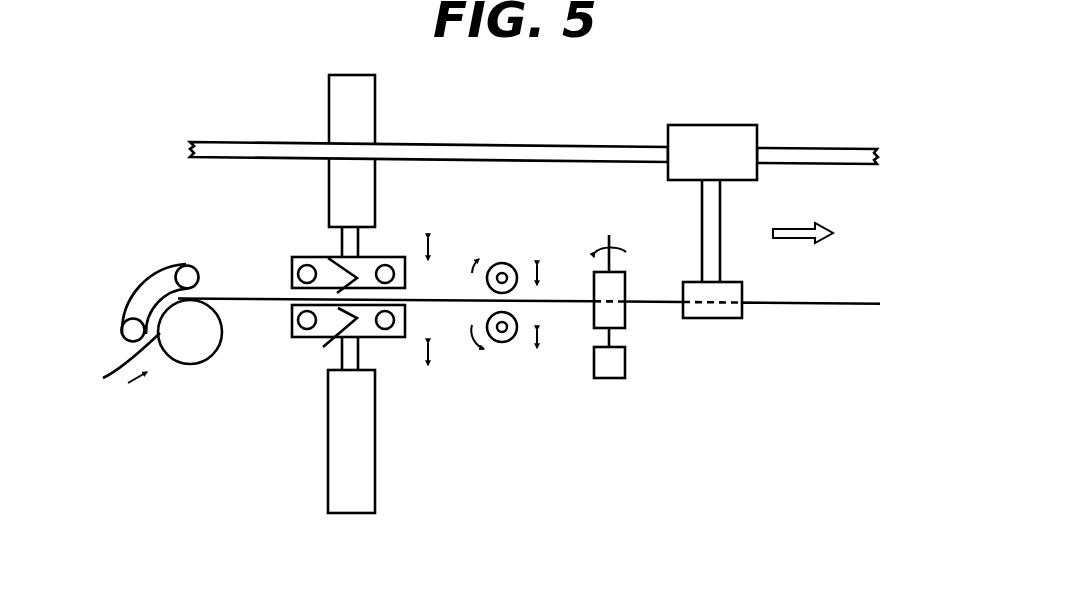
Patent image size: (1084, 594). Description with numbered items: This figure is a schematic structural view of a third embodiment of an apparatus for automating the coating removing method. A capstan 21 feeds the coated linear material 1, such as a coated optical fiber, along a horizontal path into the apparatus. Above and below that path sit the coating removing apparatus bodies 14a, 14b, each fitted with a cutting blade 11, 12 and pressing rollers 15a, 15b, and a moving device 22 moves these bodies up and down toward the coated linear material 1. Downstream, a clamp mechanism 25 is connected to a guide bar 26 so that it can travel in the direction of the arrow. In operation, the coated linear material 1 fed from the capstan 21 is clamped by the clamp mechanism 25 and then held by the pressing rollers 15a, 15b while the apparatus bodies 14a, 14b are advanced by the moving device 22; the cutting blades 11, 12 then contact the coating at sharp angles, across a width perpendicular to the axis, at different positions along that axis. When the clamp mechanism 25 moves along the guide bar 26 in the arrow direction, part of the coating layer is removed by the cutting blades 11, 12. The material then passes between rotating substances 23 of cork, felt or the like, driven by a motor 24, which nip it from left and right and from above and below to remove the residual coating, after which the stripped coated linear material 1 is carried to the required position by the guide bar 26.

The coated linear material 1 is at (263, 313).
The cutting blade 11 is at (335, 267).
The cutting blade 12 is at (323, 347).
The coating removing apparatus body 14a is at (297, 258).
The coating removing apparatus body 14b is at (298, 337).
The pressing roller 15a is at (388, 264).
The pressing roller 15b is at (387, 329).
The capstan 21 is at (190, 355).
The moving device 22 is at (370, 85).
The rotating substance 23 is at (510, 334).
The motor 24 is at (610, 378).
The clamp mechanism 25 is at (737, 310).
The guide bar 26 is at (603, 148).